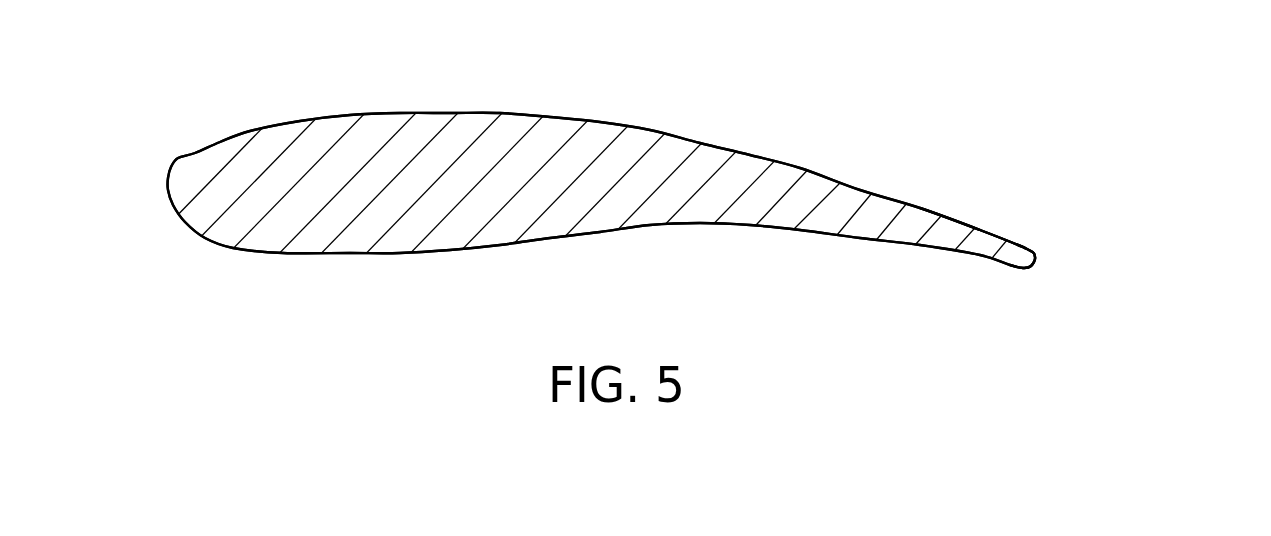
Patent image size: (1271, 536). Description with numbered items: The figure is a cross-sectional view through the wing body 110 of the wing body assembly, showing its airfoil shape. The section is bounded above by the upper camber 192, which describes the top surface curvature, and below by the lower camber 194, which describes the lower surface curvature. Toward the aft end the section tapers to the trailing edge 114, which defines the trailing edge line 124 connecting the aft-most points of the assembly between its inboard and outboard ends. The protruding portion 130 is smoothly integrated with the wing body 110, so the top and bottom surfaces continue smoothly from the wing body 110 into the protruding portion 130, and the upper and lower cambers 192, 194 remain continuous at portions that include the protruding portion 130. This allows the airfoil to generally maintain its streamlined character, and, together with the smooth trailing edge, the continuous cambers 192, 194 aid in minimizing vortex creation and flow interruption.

The wing body 110 is at (138, 160).
The upper camber 192 is at (577, 117).
The lower camber 194 is at (578, 235).
The protruding portion 130 is at (992, 232).
The trailing edge 114 is at (1037, 255).
The trailing edge line 124 is at (1037, 255).